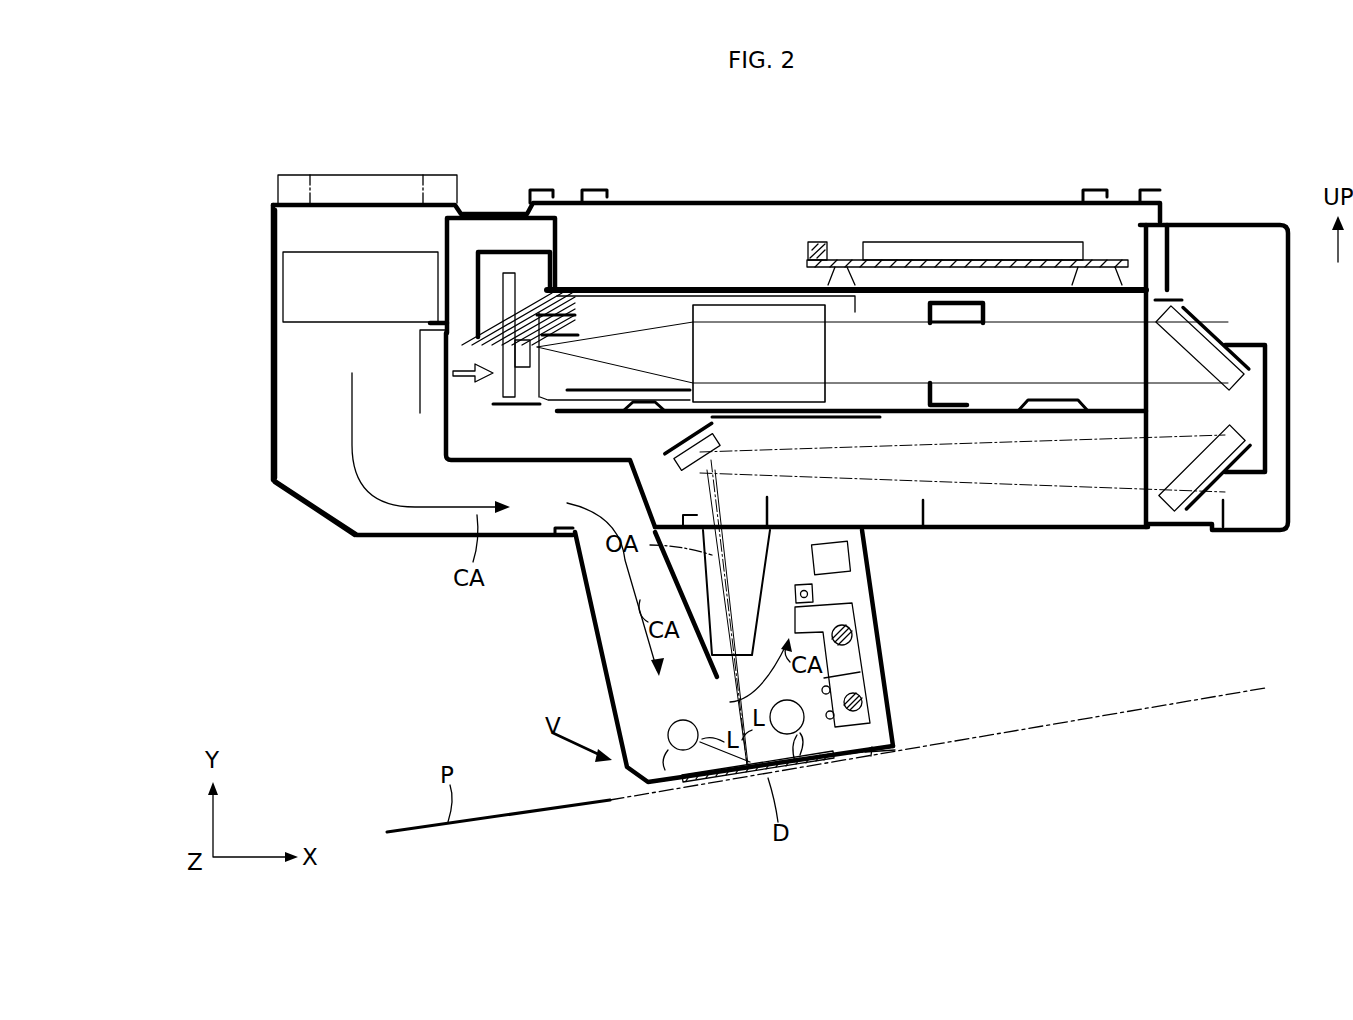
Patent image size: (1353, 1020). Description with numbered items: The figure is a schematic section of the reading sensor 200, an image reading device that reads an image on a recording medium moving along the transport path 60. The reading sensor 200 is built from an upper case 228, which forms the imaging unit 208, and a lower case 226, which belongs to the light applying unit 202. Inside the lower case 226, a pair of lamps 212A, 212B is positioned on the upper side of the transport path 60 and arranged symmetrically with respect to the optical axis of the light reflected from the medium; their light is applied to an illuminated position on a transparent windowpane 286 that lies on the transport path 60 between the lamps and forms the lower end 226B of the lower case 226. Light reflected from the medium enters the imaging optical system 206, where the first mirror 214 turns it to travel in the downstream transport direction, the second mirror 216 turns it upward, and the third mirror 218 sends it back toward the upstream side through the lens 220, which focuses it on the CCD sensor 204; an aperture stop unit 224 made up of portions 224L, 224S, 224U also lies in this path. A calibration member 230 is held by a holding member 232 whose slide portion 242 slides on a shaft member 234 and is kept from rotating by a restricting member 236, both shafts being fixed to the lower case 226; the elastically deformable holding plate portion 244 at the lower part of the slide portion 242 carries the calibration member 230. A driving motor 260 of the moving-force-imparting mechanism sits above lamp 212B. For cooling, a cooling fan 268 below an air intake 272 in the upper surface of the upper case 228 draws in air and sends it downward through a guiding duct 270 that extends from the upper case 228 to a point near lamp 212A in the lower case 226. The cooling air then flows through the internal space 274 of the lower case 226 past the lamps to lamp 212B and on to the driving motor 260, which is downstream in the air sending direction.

The reading sensor 200 is at (1262, 168).
The light applying unit 202 is at (551, 647).
The CCD sensor 204 is at (523, 335).
The imaging optical system 206 is at (637, 440).
The imaging unit 208 is at (1206, 569).
The lamp 212A is at (662, 772).
The lamp 212B is at (805, 758).
The first mirror 214 is at (722, 443).
The second mirror 216 is at (1172, 505).
The third mirror 218 is at (1195, 318).
The lens 220 is at (691, 350).
The aperture stop unit 224 is at (985, 305).
The aperture stop unit portion 224U is at (965, 295).
The aperture stop unit portion 224S is at (930, 305).
The aperture stop unit portion 224L is at (930, 403).
The lower case 226 is at (581, 661).
The lower end 226B is at (680, 792).
The upper case 228 is at (270, 400).
The calibration member 230 is at (690, 780).
The holding member 232 is at (857, 631).
The shaft member 234 is at (862, 710).
The restricting member 236 is at (813, 600).
The slide portion 242 is at (862, 655).
The holding plate portion 244 is at (880, 752).
The driving motor 260 is at (852, 557).
The cooling fan 268 is at (322, 252).
The guiding duct 270 is at (335, 498).
The air intake 272 is at (388, 175).
The internal space 274 is at (714, 712).
The windowpane 286 is at (798, 762).
The transport path 60 is at (1162, 720).